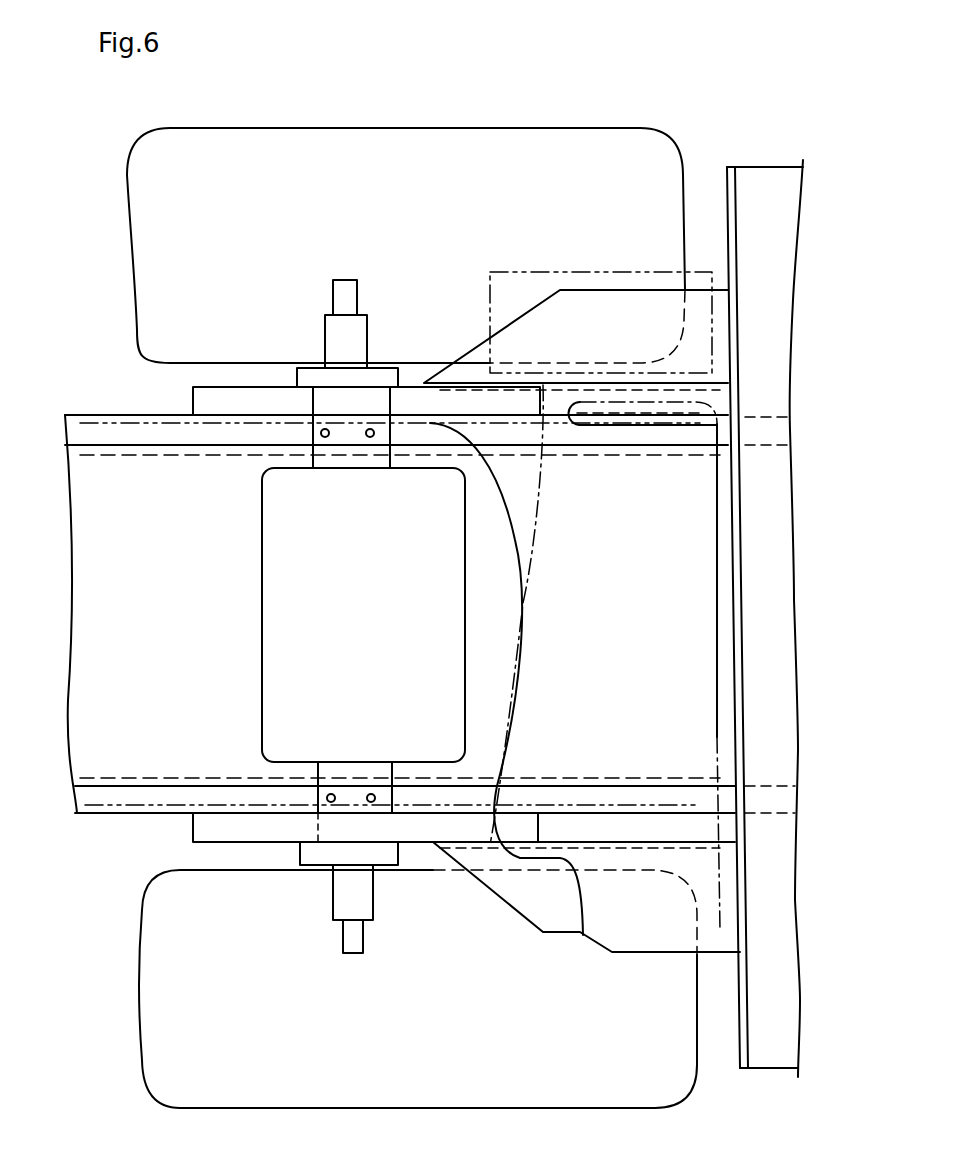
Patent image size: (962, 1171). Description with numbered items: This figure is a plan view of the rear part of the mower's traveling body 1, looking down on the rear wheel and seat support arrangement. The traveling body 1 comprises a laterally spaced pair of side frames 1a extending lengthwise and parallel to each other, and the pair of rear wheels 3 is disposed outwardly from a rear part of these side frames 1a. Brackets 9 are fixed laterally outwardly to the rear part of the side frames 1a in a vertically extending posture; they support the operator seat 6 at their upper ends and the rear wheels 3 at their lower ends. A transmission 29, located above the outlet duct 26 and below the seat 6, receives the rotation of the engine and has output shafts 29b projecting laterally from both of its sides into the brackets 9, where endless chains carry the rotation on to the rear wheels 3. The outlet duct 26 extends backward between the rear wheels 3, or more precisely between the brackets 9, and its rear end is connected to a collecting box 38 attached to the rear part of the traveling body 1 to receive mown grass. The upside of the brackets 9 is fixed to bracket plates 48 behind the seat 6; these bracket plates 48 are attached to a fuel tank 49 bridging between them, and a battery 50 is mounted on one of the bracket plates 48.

The traveling body 1 is at (70, 800).
The side frames 1a is at (101, 433).
The rear wheels 3 is at (262, 153).
The seat 6 is at (281, 413).
The brackets 9 is at (233, 395).
The outlet duct 26 is at (690, 532).
The transmission 29 is at (300, 608).
The output shafts 29b is at (345, 293).
The collecting box 38 is at (805, 215).
The bracket plates 48 is at (477, 355).
The fuel tank 49 is at (688, 690).
The battery 50 is at (610, 280).